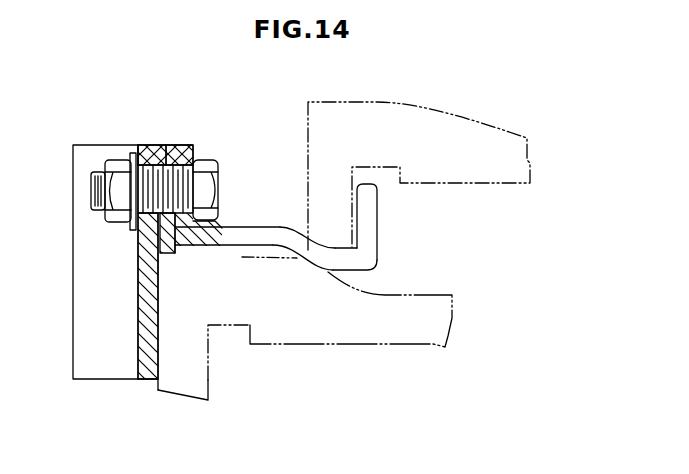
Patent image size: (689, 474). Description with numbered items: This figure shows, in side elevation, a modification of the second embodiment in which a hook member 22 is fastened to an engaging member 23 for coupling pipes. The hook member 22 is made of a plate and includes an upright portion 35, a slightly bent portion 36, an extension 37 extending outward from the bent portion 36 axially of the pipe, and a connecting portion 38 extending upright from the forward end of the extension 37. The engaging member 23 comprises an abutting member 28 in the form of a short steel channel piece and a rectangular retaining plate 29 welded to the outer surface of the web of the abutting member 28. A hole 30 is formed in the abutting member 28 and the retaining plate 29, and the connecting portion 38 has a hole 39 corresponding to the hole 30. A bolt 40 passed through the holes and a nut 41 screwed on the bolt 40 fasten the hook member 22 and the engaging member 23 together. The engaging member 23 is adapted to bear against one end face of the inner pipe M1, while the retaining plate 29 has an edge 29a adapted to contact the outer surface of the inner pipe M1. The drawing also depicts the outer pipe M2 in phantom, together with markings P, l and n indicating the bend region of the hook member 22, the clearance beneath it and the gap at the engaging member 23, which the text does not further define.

The hook member 22 is at (321, 242).
The engaging member 23 is at (148, 321).
The abutting member 28 is at (141, 362).
The retaining plate 29 is at (160, 168).
The edge of retaining plate 29a is at (169, 252).
The hole 30 is at (142, 235).
The upright portion 35 is at (373, 212).
The bent portion 36 is at (352, 258).
The extension 37 is at (245, 236).
The connecting portion 38 is at (182, 160).
The hole 39 is at (193, 153).
The bolt 40 is at (148, 168).
The nut 41 is at (110, 190).
The bend point P is at (306, 240).
The clearance l is at (307, 266).
The gap n is at (199, 380).
The inner pipe M1 is at (443, 330).
The second member M2 is at (484, 137).